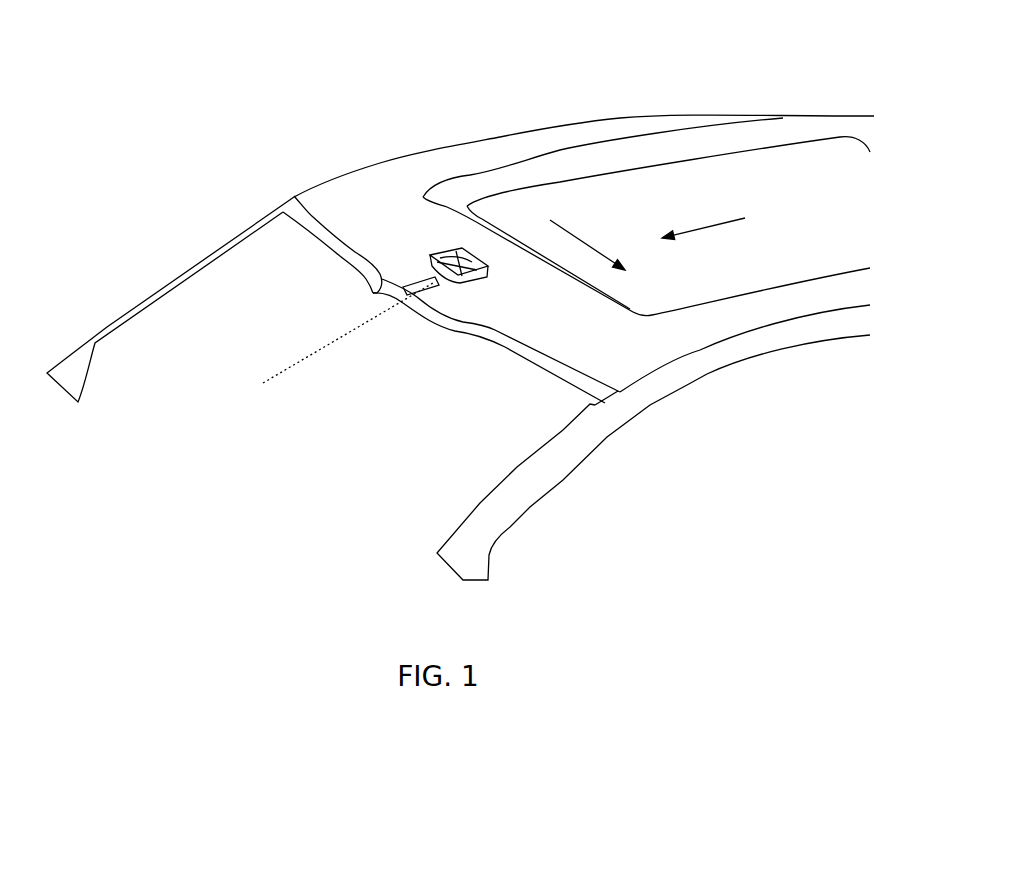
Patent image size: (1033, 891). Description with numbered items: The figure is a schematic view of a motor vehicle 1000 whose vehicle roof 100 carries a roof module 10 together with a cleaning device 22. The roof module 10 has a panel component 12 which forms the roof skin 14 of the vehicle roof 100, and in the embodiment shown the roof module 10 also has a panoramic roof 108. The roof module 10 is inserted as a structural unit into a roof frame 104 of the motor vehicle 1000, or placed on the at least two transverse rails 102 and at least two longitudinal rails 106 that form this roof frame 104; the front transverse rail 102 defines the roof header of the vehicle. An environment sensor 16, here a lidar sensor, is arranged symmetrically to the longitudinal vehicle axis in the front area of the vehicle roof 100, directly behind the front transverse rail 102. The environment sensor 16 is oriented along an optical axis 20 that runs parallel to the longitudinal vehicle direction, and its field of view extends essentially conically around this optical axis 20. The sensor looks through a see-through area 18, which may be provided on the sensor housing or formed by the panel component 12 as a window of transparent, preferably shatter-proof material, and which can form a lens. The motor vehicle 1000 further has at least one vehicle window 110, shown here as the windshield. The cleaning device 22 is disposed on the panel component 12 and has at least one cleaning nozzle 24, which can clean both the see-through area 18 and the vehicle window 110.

The motor vehicle 1000 is at (181, 166).
The vehicle roof 100 is at (252, 153).
The roof module 10 is at (384, 173).
The roof skin 14 is at (477, 155).
The panel component 12 is at (528, 147).
The panoramic roof 108 is at (638, 191).
The front transverse rail 102 is at (333, 243).
The roof frame 104 is at (702, 384).
The longitudinal rails 106 is at (827, 327).
The vehicle window 110 is at (541, 410).
The environment sensor 16 is at (462, 283).
The see-through area 18 is at (447, 273).
The optical axis 20 is at (357, 330).
The cleaning device 22 is at (408, 289).
The cleaning nozzle 24 is at (372, 279).